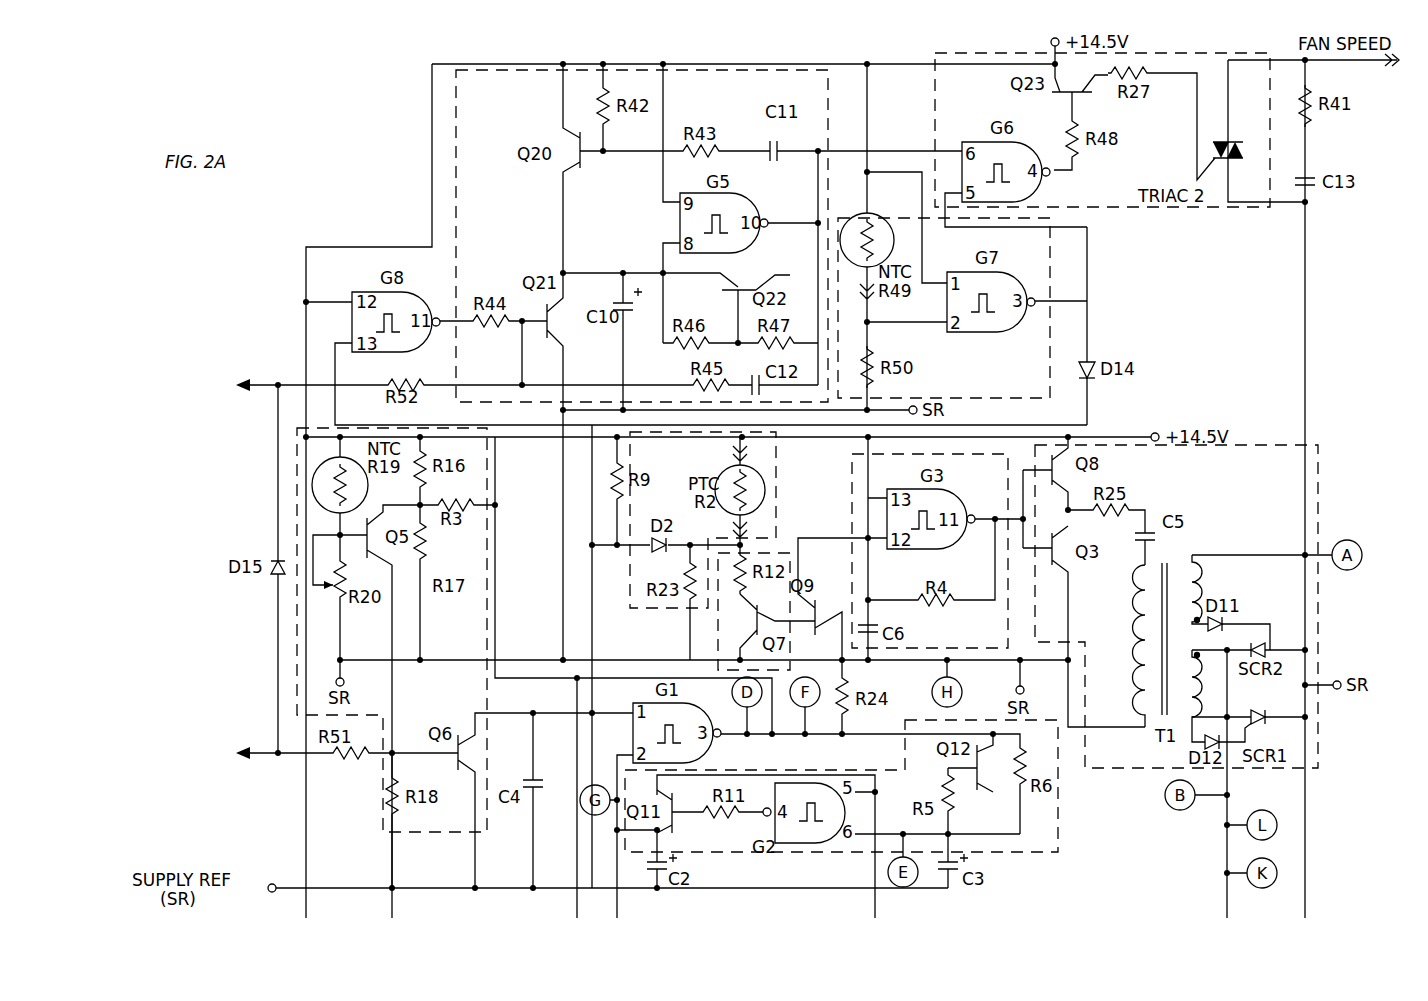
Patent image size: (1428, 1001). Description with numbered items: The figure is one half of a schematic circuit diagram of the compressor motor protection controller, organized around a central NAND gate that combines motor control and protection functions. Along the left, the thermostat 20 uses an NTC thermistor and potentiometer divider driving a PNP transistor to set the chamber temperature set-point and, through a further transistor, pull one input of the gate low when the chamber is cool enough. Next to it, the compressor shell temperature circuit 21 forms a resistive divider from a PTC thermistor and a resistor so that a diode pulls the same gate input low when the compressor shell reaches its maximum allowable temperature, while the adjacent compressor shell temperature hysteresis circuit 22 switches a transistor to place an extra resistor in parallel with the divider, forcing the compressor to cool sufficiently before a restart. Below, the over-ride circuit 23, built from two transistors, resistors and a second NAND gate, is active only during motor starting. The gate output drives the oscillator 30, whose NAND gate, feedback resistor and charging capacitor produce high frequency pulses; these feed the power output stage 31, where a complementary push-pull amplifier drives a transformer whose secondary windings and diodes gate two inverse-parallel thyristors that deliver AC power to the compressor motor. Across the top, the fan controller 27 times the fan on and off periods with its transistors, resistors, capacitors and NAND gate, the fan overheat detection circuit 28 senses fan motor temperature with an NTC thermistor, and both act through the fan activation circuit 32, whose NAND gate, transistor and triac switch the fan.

The thermostat 20 is at (295, 495).
The compressor shell temperature circuit 21 is at (660, 612).
The compressor shell temperature hysteresis circuit 22 is at (790, 553).
The over-ride circuit 23 is at (1060, 818).
The fan controller 27 is at (457, 112).
The fan overheat detection circuit 28 is at (1052, 267).
The oscillator 30 is at (852, 490).
The power output stage 31 is at (1320, 490).
The fan activation circuit 32 is at (1150, 212).